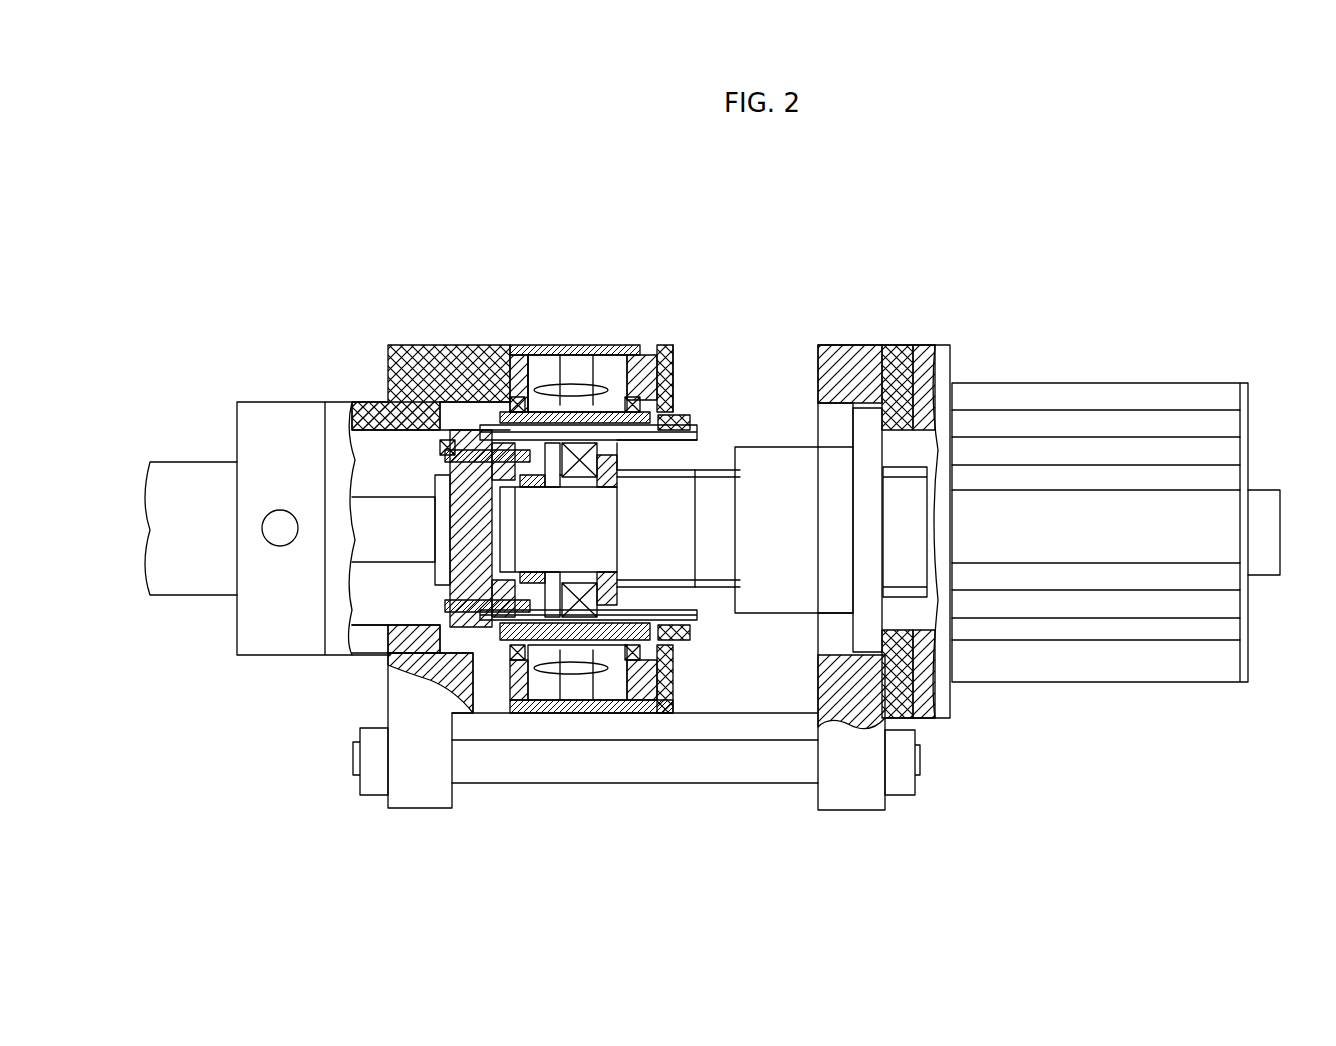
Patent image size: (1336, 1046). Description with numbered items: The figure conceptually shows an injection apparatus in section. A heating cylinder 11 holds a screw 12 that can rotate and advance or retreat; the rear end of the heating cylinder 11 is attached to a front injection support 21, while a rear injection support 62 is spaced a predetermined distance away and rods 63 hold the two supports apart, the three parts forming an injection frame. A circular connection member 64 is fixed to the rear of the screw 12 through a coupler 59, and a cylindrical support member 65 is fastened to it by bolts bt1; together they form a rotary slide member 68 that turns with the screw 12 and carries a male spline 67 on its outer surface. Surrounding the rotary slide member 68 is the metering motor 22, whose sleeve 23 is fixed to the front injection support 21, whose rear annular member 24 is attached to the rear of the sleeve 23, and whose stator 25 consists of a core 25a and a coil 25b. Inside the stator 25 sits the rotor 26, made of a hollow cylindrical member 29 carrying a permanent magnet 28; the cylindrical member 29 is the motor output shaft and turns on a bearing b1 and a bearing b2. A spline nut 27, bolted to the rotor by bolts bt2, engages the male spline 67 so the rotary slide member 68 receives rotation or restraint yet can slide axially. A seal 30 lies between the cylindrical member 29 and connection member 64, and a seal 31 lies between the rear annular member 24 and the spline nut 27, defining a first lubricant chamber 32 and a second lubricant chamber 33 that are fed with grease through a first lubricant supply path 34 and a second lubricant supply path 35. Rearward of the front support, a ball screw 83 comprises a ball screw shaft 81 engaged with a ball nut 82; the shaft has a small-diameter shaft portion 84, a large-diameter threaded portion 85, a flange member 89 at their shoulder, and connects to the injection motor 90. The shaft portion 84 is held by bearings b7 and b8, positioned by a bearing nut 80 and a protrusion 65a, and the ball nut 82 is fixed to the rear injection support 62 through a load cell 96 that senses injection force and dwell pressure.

The heating cylinder 11 is at (180, 462).
The screw 12 is at (445, 563).
The front injection support 21 is at (410, 345).
The metering motor 22 is at (618, 327).
The sleeve 23 is at (562, 345).
The rear annular member 24 is at (693, 330).
The stator 25 is at (522, 347).
The core 25a is at (580, 690).
The coil 25b is at (563, 692).
The rotor 26 is at (575, 293).
The spline nut 27 is at (688, 432).
The permanent magnet 28 is at (575, 376).
The cylindrical member 29 is at (600, 395).
The seal 30 is at (432, 345).
The seal 31 is at (680, 652).
The first lubricant chamber 32 is at (692, 414).
The second lubricant chamber 33 is at (518, 660).
The first lubricant supply path 34 is at (645, 398).
The second lubricant supply path 35 is at (600, 440).
The coupler 59 is at (440, 523).
The rear injection support 62 is at (852, 345).
The rods 63 is at (745, 770).
The connection member 64 is at (445, 570).
The support member 65 is at (455, 625).
The protrusion 65a is at (550, 485).
The male spline 67 is at (545, 688).
The rotary slide member 68 is at (329, 596).
The bearing nut 80 is at (460, 450).
The ball screw shaft 81 is at (720, 496).
The ball nut 82 is at (738, 382).
The ball screw 83 is at (735, 476).
The shaft portion 84 is at (558, 530).
The threaded portion 85 is at (668, 576).
The flange member 89 is at (612, 598).
The injection motor 90 is at (1055, 383).
The load cell 96 is at (905, 720).
The bearing b1 is at (517, 662).
The bearing b2 is at (650, 705).
The bearing b7 is at (440, 435).
The bearing b8 is at (600, 478).
The bolts bt1 is at (443, 607).
The bolts bt2 is at (697, 636).